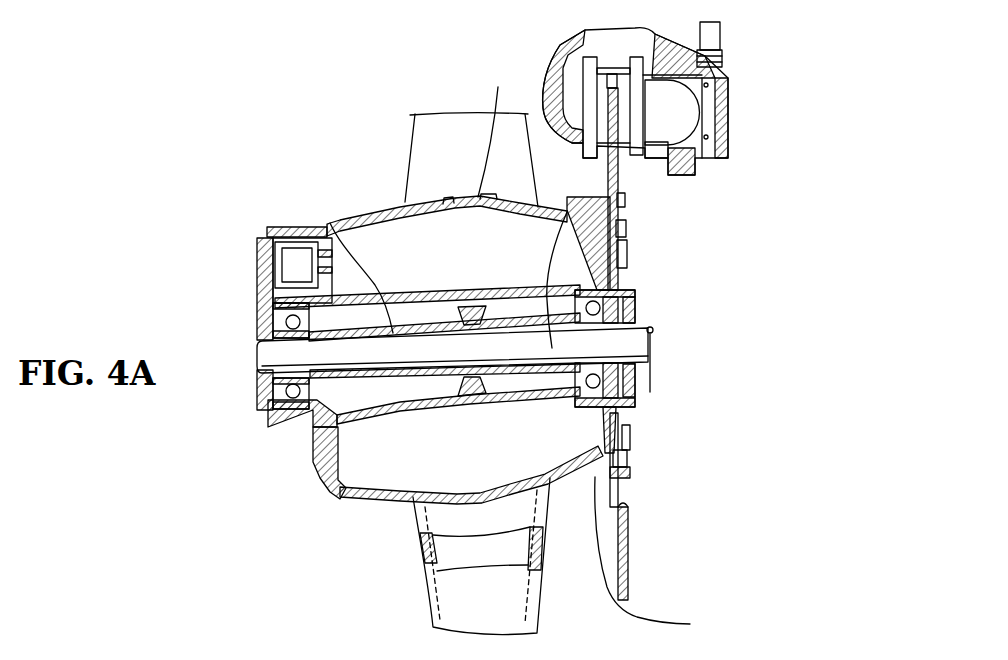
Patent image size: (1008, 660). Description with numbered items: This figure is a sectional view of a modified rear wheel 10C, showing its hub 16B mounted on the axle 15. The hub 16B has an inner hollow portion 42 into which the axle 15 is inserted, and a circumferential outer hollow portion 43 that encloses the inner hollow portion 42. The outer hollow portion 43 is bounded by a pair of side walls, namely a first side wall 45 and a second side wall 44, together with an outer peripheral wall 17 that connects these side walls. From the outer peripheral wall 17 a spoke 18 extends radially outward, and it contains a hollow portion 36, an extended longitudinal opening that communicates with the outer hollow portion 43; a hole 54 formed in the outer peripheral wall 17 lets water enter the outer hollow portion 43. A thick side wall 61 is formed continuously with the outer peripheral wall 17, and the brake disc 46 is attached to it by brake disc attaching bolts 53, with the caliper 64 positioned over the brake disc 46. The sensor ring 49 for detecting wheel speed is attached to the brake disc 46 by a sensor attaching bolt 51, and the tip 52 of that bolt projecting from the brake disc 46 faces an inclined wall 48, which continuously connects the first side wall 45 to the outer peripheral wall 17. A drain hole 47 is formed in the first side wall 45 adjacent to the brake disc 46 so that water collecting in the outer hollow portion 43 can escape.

The rear wheel 10C is at (406, 140).
The hole 54 is at (499, 127).
The caliper 64 is at (735, 93).
The axle 15 is at (330, 223).
The inner hollow portion 42 is at (345, 320).
The brake disc attaching bolt 53 is at (617, 201).
The sensor attaching bolt 51 is at (615, 228).
The thick side wall 61 is at (652, 345).
The drain hole 47 is at (617, 413).
The sensor ring 49 is at (630, 430).
The first side wall 45 is at (630, 470).
The tip of sensor ring attaching bolt 52 is at (627, 523).
The brake disc 46 is at (630, 592).
The inclined wall 48 is at (662, 557).
The outer hollow portion 43 is at (352, 456).
The second side wall 44 is at (315, 463).
The hub 16B is at (342, 496).
The outer peripheral wall 17 is at (373, 494).
The hollow portion 36 is at (445, 548).
The spoke 18 is at (423, 608).